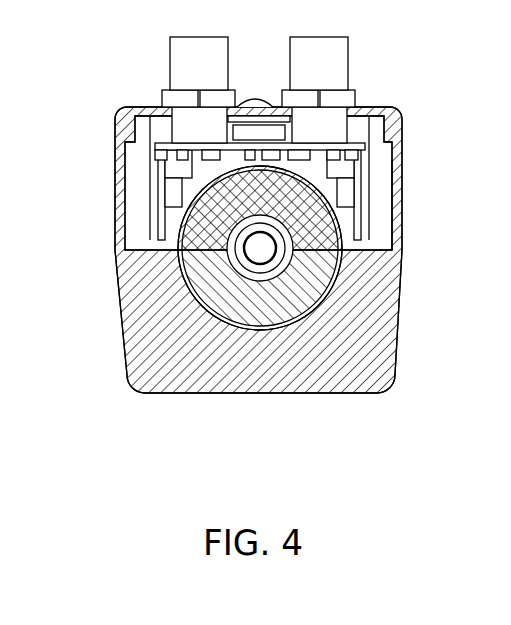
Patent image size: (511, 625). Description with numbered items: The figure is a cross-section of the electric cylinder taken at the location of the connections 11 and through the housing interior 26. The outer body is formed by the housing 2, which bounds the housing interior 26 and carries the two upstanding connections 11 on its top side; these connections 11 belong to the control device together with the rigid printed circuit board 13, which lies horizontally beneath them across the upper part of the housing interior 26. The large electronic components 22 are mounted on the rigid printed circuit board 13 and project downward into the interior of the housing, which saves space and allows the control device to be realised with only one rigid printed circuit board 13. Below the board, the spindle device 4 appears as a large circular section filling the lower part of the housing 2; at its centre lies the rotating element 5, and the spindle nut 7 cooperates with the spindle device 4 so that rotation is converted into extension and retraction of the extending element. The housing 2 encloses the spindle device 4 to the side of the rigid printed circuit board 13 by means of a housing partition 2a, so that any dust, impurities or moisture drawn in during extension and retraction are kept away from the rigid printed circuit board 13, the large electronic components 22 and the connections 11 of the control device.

The housing 2 is at (333, 394).
The housing partition 2a is at (330, 195).
The spindle device 4 is at (180, 251).
The rotating element 5 is at (250, 272).
The spindle nut 7 is at (273, 310).
The connections 11 is at (172, 65).
The rigid printed circuit board 13 is at (150, 148).
The large electronic components 22 is at (167, 181).
The housing interior 26 is at (380, 180).